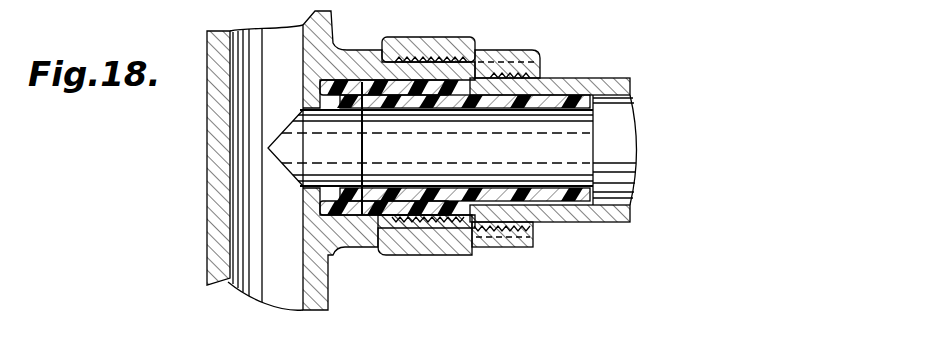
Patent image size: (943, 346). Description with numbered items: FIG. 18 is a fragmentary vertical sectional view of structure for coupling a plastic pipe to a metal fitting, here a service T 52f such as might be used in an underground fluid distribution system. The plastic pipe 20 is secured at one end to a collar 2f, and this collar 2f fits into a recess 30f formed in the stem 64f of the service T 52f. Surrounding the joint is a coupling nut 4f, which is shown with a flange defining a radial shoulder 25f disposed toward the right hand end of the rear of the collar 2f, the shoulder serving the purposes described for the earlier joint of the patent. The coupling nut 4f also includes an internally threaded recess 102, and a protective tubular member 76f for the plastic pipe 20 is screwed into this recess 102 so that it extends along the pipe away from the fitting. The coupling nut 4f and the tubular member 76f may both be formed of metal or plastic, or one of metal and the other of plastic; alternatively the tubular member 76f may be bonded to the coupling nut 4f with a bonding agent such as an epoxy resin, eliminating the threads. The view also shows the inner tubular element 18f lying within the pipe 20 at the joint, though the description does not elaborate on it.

The service T 52f is at (199, 206).
The stem 64f is at (360, 250).
The collar 2f is at (400, 106).
The internally threaded recess 102 is at (540, 70).
The protective member 76f is at (598, 218).
The recess 30f is at (380, 200).
The radial shoulder 25f is at (438, 104).
The plastic pipe 20 is at (517, 190).
The inner tube 18f is at (337, 190).
The coupling nut 4f is at (455, 252).